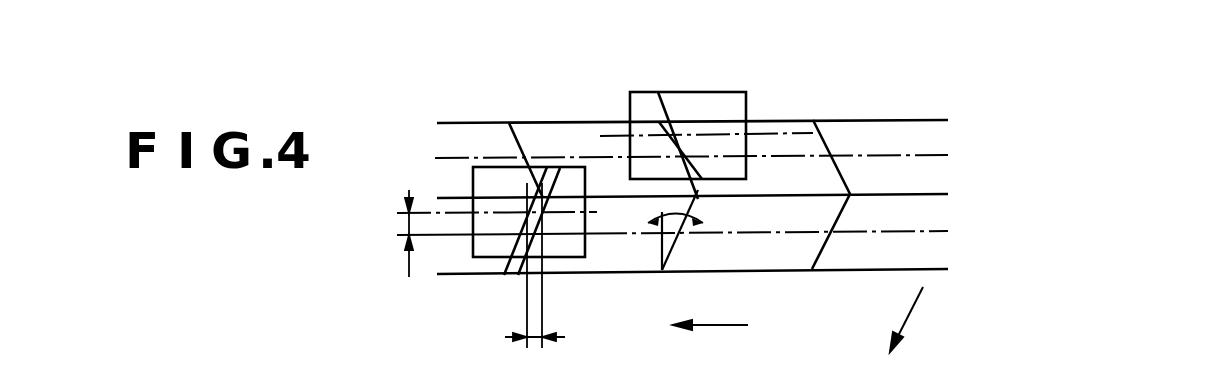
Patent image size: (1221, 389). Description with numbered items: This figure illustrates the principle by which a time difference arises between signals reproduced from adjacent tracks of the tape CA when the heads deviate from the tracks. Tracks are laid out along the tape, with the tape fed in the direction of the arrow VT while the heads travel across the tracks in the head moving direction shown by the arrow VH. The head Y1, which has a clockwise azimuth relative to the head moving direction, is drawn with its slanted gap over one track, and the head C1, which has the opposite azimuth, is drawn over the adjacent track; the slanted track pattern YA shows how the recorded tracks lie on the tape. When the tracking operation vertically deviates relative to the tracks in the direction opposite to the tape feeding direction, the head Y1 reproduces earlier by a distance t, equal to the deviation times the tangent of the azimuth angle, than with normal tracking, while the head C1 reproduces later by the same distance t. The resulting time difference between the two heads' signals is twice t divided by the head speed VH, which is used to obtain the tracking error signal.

The tape track (recording tape) CA is at (900, 130).
The head C1 is at (712, 91).
The head Y1 is at (490, 257).
The recorded track pattern YA is at (790, 269).
The distance t is at (539, 265).
The head moving direction VH is at (710, 341).
The tape feeding direction VT is at (917, 319).